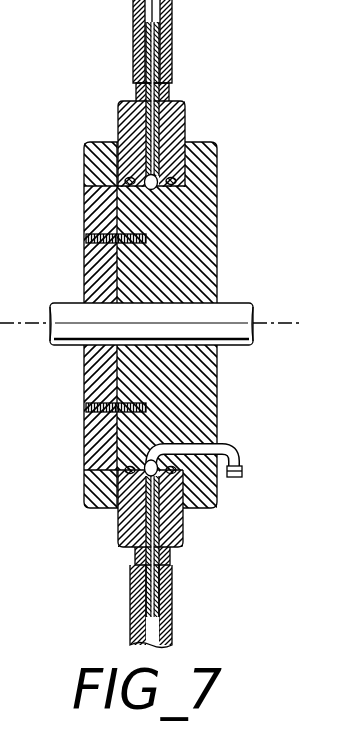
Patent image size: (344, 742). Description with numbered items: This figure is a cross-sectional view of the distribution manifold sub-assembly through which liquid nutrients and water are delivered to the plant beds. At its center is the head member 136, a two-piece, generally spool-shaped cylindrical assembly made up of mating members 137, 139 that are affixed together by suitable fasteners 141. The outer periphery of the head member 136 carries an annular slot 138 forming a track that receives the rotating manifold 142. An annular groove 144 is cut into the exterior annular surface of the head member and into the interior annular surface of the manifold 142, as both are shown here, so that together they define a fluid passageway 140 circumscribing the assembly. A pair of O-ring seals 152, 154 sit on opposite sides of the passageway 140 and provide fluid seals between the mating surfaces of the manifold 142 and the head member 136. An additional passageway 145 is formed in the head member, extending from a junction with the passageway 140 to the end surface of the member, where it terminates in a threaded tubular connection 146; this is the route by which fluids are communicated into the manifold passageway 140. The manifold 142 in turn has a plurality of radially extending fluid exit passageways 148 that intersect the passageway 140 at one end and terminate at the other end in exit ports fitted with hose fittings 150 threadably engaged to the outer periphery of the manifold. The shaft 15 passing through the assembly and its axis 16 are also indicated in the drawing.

The shaft 15 is at (62, 303).
The axis of shaft 16 is at (283, 326).
The head member 136 is at (258, 169).
The mating member 137 is at (212, 266).
The annular slot 138 is at (187, 150).
The mating member 139 is at (84, 219).
The fluid passageway 140 is at (144, 185).
The fasteners 141 is at (86, 240).
The rotating manifold 142 is at (128, 101).
The annular groove 144 is at (124, 141).
The additional passageway 145 is at (217, 413).
The threaded tubular connection 146 is at (240, 463).
The fluid exit passageways 148 is at (176, 101).
The hose fittings 150 is at (135, 86).
The O-ring seal 152 is at (125, 179).
The O-ring seal 154 is at (203, 196).